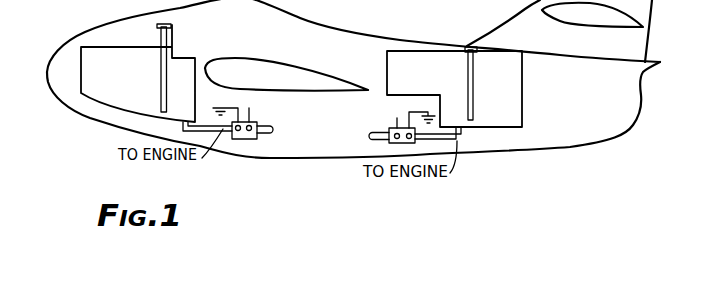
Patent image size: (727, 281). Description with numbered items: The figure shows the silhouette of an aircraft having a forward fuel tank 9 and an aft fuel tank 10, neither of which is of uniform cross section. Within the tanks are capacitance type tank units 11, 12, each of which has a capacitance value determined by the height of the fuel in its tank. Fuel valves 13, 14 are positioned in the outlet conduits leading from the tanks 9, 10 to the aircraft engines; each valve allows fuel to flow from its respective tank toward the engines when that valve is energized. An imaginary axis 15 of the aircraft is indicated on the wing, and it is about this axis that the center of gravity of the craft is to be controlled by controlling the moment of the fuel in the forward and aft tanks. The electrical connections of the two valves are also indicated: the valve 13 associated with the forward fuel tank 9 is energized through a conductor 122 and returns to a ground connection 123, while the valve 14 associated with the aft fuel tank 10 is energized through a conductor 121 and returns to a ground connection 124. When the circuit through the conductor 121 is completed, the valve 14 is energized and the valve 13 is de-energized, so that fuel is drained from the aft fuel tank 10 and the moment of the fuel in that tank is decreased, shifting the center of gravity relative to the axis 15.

The forward fuel tank 9 is at (180, 56).
The aft fuel tank 10 is at (523, 68).
The capacitance type tank unit 11 is at (172, 26).
The capacitance type tank unit 12 is at (467, 46).
The fuel valve 13 is at (252, 139).
The fuel valve 14 is at (389, 142).
The imaginary axis 15 is at (262, 74).
The conductor 121 is at (397, 118).
The conductor 122 is at (249, 108).
The ground connection 123 is at (225, 107).
The ground connection 124 is at (413, 100).